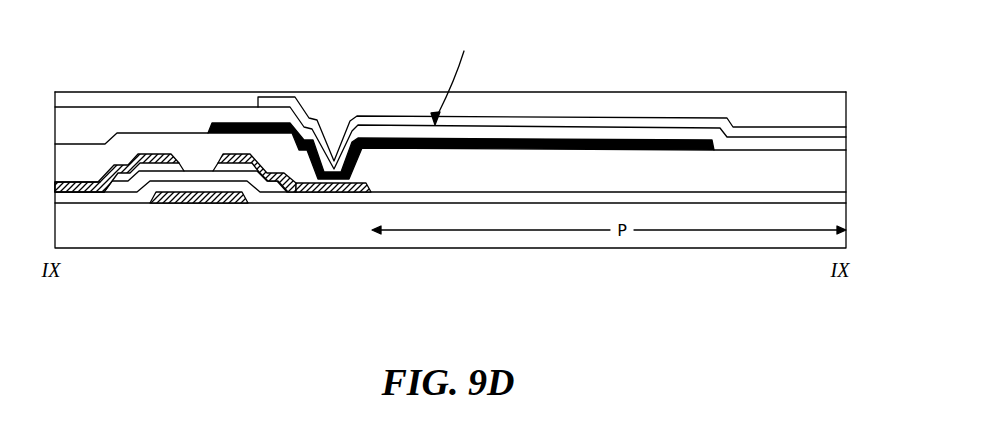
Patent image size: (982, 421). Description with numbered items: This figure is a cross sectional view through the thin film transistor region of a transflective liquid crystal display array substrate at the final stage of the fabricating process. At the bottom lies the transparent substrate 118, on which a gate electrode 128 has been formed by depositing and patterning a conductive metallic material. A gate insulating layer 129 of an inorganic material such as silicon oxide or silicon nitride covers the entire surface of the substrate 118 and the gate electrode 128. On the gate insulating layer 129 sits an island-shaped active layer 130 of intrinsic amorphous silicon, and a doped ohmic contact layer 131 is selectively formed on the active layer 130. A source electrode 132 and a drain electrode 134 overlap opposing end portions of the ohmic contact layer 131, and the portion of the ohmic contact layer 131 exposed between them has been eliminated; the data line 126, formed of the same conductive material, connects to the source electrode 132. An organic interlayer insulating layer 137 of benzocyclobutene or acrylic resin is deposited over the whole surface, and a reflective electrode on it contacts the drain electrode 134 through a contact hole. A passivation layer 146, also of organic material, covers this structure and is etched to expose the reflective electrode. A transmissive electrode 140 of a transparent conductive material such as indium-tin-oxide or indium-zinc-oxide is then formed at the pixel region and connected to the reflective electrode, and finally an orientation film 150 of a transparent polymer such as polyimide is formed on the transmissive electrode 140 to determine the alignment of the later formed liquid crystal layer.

The transparent substrate 118 is at (333, 239).
The data line 126 is at (82, 181).
The gate electrode 128 is at (188, 203).
The gate insulating layer 129 is at (700, 202).
The active layer 130 is at (188, 171).
The ohmic contact layer 131 is at (250, 154).
The source electrode 132 is at (141, 154).
The drain electrode 134 is at (313, 192).
The interlayer insulating layer 137 is at (600, 170).
The transmissive electrode 140 is at (540, 125).
The passivation layer 146 is at (455, 79).
The orientation film 150 is at (358, 92).